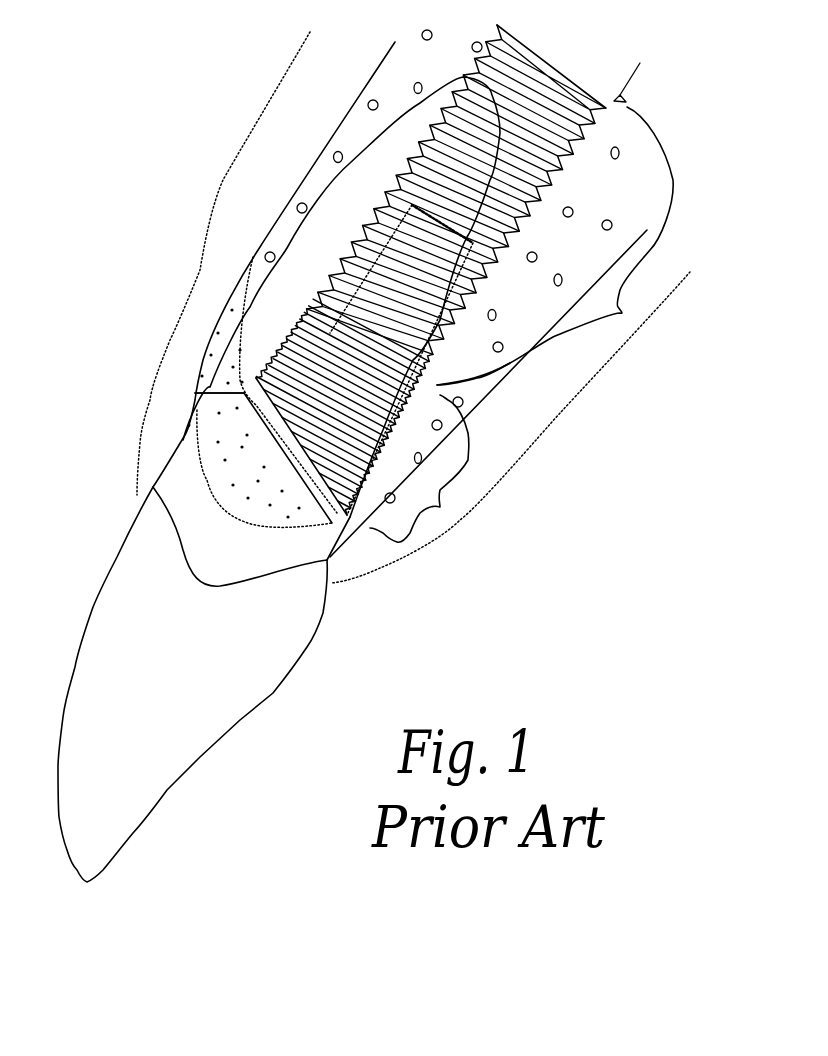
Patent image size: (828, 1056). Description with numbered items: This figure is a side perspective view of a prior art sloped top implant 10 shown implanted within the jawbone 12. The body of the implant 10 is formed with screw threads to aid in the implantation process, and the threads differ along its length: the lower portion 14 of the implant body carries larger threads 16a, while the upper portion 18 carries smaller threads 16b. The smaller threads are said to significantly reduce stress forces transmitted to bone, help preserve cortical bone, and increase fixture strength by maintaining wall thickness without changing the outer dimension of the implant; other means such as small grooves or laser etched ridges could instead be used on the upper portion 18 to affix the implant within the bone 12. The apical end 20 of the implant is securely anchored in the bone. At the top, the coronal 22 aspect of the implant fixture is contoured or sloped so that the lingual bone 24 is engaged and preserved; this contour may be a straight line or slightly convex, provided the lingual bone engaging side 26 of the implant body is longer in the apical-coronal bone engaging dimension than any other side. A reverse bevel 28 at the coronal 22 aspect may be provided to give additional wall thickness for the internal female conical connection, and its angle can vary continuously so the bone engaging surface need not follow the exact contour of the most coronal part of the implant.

The sloped top implant 10 is at (330, 240).
The jawbone 12 is at (431, 270).
The lower portion 14 is at (365, 462).
The larger threads 16a is at (410, 173).
The smaller threads 16b is at (282, 337).
The upper portion 18 is at (419, 468).
The apical end 20 is at (553, 57).
The coronal 22 is at (257, 452).
The lingual bone 24 is at (493, 403).
The lingual bone engaging side 26 is at (643, 69).
The reverse bevel 28 is at (243, 393).